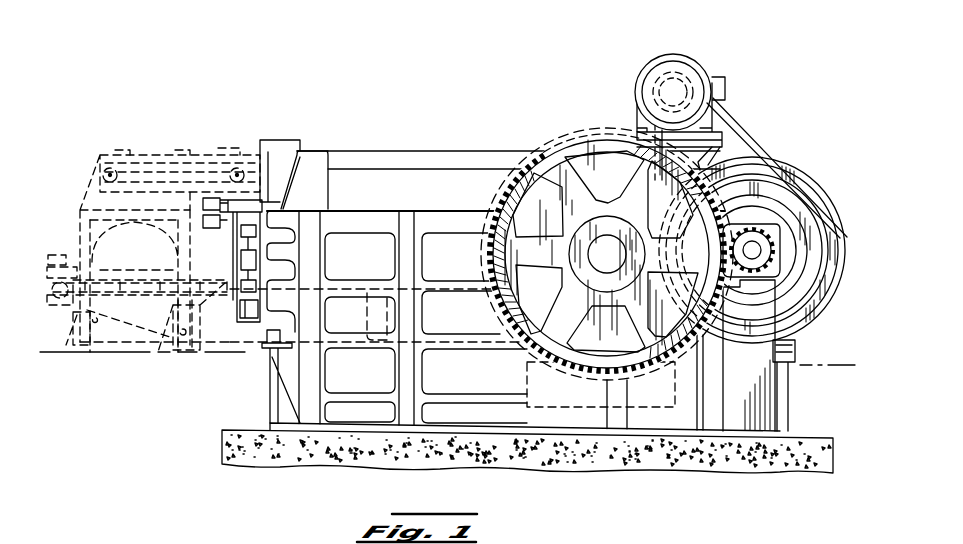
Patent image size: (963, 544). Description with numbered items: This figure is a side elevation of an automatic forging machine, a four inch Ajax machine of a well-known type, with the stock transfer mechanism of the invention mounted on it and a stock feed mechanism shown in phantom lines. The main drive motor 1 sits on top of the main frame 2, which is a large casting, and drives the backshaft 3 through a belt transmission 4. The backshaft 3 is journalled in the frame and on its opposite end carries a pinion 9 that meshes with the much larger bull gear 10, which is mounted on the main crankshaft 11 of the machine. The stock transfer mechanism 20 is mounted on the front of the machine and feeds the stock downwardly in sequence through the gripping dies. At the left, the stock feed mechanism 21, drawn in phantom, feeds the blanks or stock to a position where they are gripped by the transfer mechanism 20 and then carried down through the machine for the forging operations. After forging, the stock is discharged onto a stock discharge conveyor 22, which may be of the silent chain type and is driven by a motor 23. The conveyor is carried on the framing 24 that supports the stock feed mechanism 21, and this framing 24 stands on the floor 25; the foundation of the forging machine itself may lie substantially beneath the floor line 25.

The main drive motor 1 is at (700, 68).
The main frame 2 is at (392, 143).
The backshaft 3 is at (750, 260).
The belt transmission 4 is at (771, 141).
The pinion 9 is at (781, 274).
The bull gear 10 is at (548, 142).
The main crankshaft 11 is at (610, 263).
The stock transfer mechanism 20 is at (240, 338).
The stock feed mechanism 21 is at (137, 150).
The stock discharge conveyor 22 is at (117, 275).
The motor 23 is at (47, 245).
The framing 24 is at (168, 348).
The floor 25 is at (45, 356).